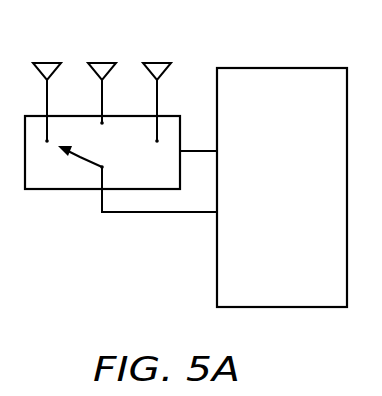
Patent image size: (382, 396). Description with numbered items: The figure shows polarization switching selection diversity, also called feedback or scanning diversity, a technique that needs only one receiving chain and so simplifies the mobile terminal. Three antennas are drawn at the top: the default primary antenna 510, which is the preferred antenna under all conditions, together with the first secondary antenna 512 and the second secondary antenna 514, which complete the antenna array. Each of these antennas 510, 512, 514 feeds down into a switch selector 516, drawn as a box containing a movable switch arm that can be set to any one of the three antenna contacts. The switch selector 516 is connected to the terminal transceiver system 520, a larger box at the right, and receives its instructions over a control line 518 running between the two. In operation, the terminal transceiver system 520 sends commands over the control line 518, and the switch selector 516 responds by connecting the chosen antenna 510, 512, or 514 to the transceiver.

The default primary antenna 510 is at (50, 62).
The first secondary antenna 512 is at (105, 62).
The second secondary antenna 514 is at (160, 62).
The switch selector 516 is at (78, 191).
The control line 518 is at (203, 146).
The terminal transceiver system 520 is at (267, 67).